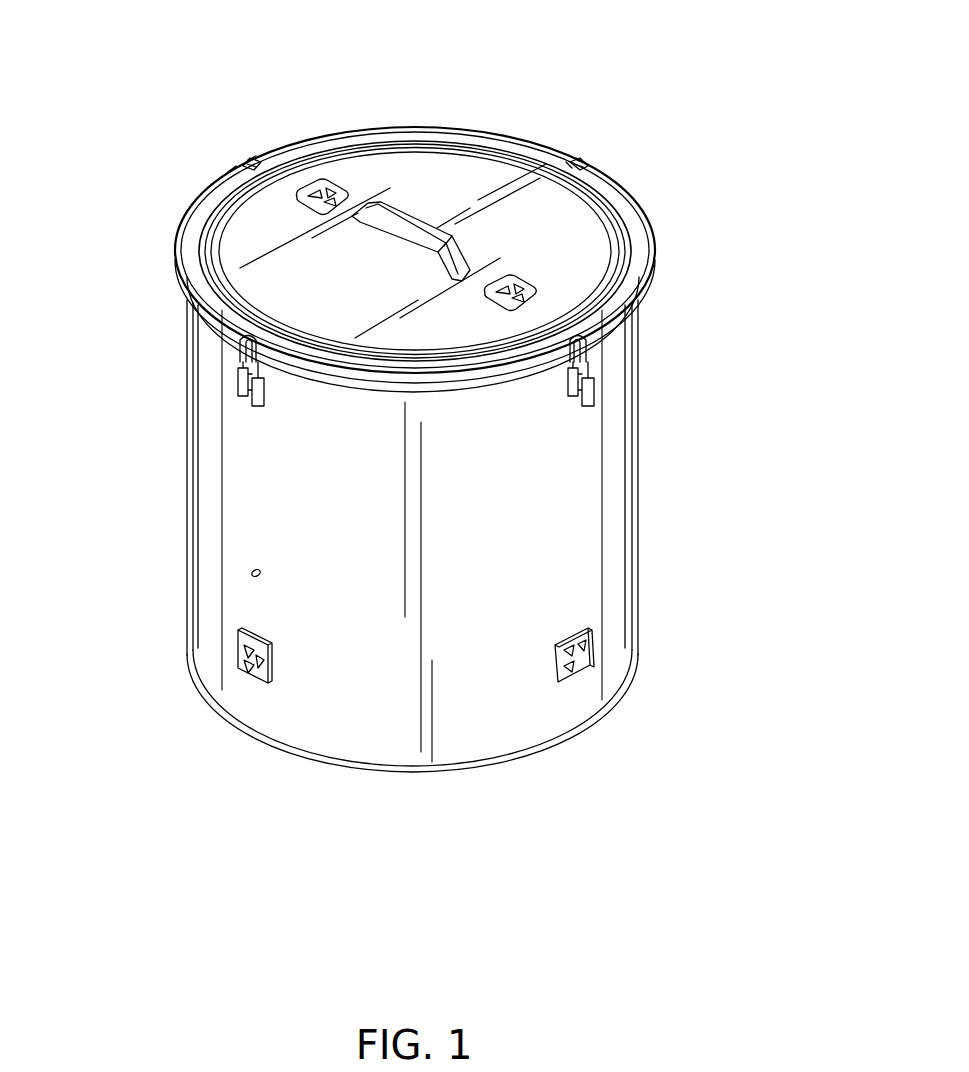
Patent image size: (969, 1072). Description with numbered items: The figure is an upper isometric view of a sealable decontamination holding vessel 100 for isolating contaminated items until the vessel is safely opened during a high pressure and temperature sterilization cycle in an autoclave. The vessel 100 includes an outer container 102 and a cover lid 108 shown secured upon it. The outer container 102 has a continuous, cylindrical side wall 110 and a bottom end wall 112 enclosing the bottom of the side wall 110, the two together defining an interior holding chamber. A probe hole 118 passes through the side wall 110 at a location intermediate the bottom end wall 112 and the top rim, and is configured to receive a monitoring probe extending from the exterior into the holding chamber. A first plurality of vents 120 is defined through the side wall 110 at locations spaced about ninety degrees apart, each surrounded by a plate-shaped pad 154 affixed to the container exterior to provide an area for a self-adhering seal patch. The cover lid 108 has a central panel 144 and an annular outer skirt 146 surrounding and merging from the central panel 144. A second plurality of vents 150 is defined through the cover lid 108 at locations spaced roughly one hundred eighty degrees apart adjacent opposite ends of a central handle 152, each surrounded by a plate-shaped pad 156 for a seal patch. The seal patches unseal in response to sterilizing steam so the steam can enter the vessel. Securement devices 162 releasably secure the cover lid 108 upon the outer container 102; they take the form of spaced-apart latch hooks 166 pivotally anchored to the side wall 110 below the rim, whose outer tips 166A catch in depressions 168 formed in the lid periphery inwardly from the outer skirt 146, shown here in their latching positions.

The sealable decontamination holding vessel 100 is at (728, 68).
The outer container 102 is at (643, 515).
The cover lid 108 is at (638, 216).
The side wall 110 is at (533, 547).
The bottom end wall 112 is at (585, 735).
The probe hole 118 is at (250, 572).
The first plurality of vents 120 is at (240, 668).
The central panel 144 is at (388, 293).
The annular outer skirt 146 is at (655, 285).
The second plurality of vents 150 is at (332, 183).
The central handle 152 is at (418, 212).
The plate-shaped pad 154 is at (275, 655).
The plate-shaped pad 156 is at (310, 213).
The securement devices 162 is at (216, 350).
The latch hooks 166 is at (246, 160).
The outer tips 166A is at (250, 158).
The depressions 168 is at (228, 172).